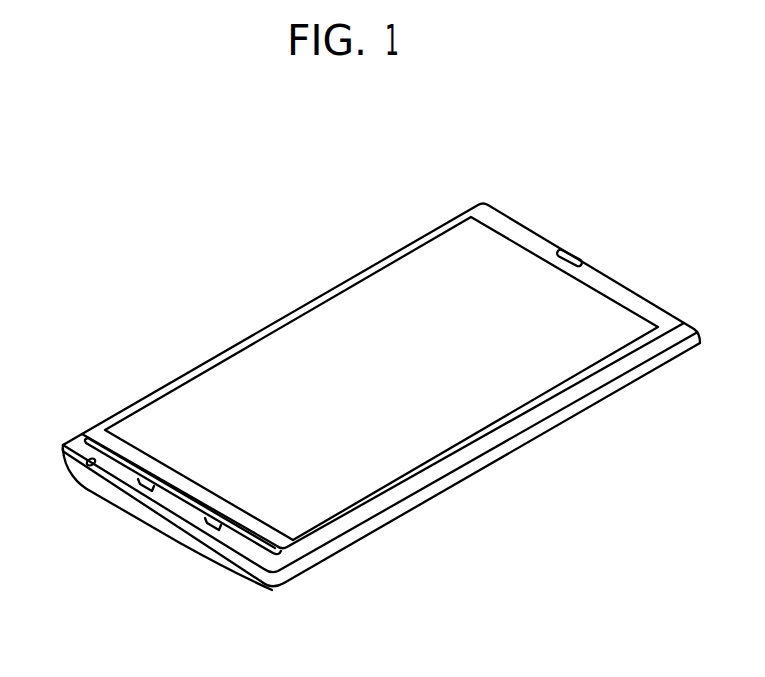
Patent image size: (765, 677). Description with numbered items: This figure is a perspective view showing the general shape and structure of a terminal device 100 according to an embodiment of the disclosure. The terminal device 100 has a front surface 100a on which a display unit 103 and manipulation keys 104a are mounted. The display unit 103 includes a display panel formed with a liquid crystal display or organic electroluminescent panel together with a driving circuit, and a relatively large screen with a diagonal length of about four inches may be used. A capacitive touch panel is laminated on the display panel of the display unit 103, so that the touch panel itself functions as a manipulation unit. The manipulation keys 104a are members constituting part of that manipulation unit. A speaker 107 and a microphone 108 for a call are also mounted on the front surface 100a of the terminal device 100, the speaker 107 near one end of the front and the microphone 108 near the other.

The terminal device 100 is at (400, 521).
The front surface 100a is at (625, 292).
The display unit 103 is at (462, 413).
The manipulation keys 104a is at (212, 522).
The speaker 107 is at (568, 255).
The microphone 108 is at (92, 471).